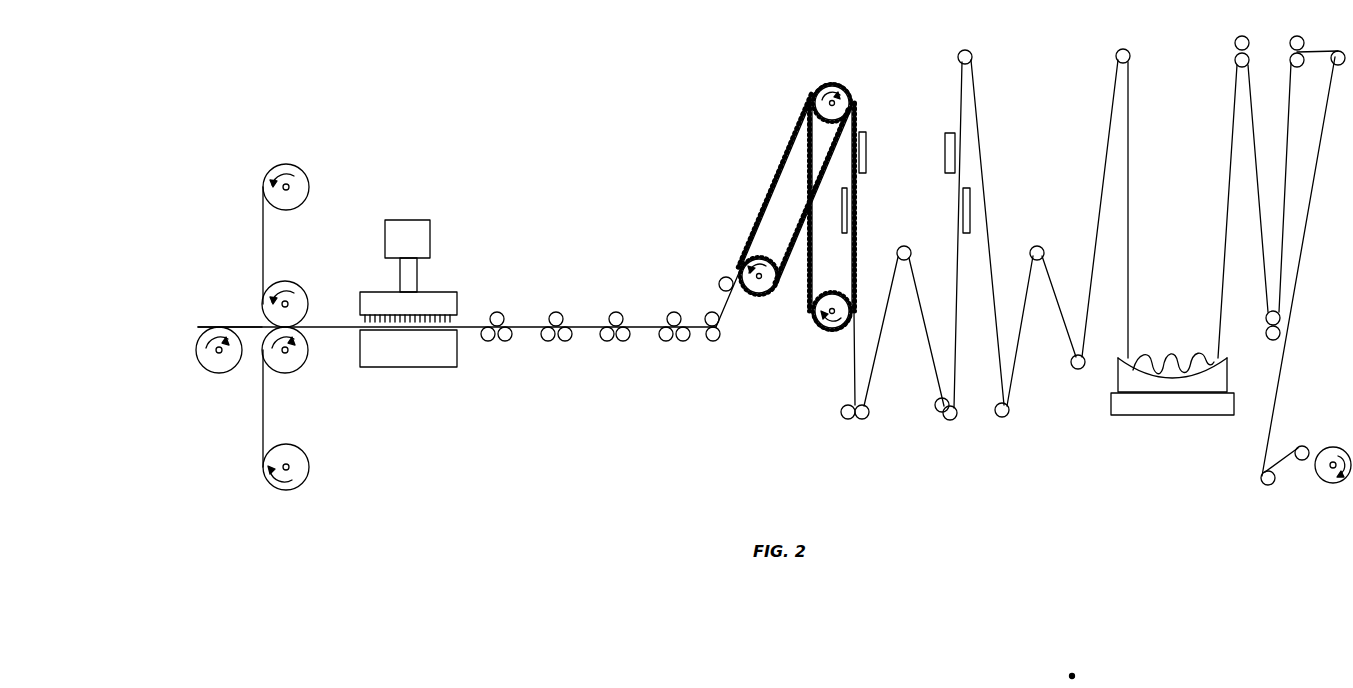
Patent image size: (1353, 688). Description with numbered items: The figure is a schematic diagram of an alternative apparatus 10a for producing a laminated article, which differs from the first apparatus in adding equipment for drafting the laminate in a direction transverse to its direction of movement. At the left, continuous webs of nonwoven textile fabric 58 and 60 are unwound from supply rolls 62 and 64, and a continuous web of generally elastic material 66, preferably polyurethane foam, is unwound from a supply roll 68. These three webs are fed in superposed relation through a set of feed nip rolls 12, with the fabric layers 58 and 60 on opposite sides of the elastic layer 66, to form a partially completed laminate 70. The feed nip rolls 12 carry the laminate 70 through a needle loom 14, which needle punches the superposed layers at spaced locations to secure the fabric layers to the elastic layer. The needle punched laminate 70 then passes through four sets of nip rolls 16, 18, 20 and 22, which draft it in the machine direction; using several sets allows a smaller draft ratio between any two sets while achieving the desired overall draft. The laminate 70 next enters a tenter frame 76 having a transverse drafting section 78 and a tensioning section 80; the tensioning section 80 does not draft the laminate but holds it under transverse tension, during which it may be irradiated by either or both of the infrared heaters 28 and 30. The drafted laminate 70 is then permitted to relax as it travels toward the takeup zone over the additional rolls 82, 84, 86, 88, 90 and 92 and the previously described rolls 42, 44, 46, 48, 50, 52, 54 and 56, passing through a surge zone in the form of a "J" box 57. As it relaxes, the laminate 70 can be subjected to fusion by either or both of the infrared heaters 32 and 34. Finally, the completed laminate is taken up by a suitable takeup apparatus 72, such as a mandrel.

The apparatus 10a is at (596, 229).
The feed nip rolls 12 is at (300, 288).
The needle loom 14 is at (430, 228).
The nip rolls 16 is at (499, 311).
The nip rolls 18 is at (559, 311).
The nip rolls 20 is at (619, 311).
The nip rolls 22 is at (677, 311).
The infrared heater 28 is at (868, 138).
The infrared heater 30 is at (842, 215).
The infrared heater 32 is at (944, 150).
The infrared heater 34 is at (971, 207).
The roll 42 is at (1081, 354).
The roll 44 is at (1130, 62).
The roll 46 is at (1237, 66).
The roll 48 is at (1271, 311).
The roll 50 is at (1302, 67).
The roll 52 is at (1335, 66).
The roll 54 is at (1272, 471).
The roll 56 is at (1301, 460).
The "J" box 57 is at (1111, 404).
The nonwoven textile fabric layer 58 is at (263, 235).
The nonwoven textile fabric layer 60 is at (263, 420).
The supply roll 62 is at (300, 169).
The supply roll 64 is at (311, 455).
The generally elastic material layer 66 is at (248, 325).
The supply roll 68 is at (218, 373).
The laminate 70 is at (333, 329).
The takeup apparatus 72 is at (1331, 483).
The tenter frame 76 is at (778, 139).
The transverse drafting section 78 is at (771, 261).
The tensioning section 80 is at (816, 258).
The roll 82 is at (865, 407).
The roll 84 is at (904, 262).
The roll 86 is at (936, 408).
The roll 88 is at (975, 65).
The roll 90 is at (1008, 404).
The roll 92 is at (1038, 262).